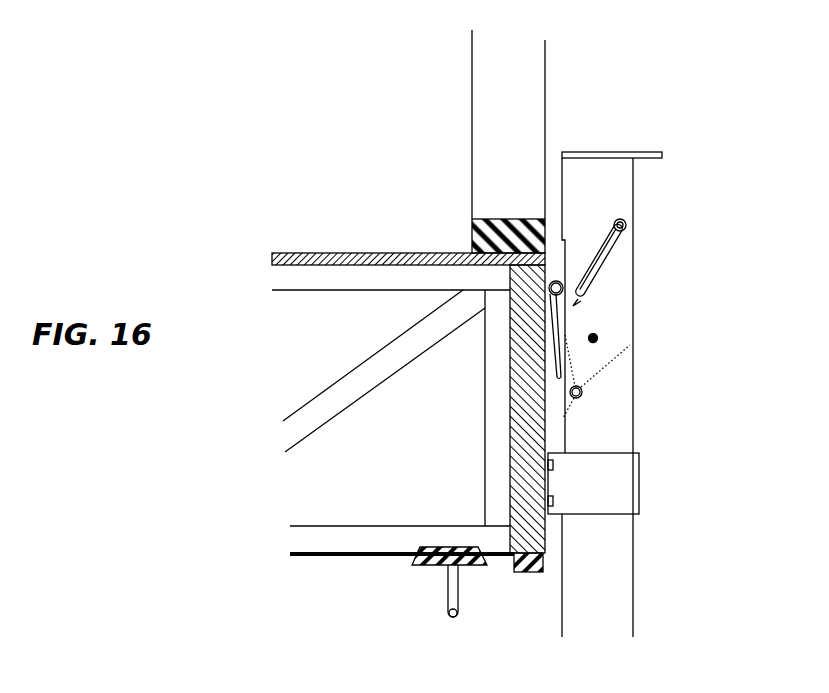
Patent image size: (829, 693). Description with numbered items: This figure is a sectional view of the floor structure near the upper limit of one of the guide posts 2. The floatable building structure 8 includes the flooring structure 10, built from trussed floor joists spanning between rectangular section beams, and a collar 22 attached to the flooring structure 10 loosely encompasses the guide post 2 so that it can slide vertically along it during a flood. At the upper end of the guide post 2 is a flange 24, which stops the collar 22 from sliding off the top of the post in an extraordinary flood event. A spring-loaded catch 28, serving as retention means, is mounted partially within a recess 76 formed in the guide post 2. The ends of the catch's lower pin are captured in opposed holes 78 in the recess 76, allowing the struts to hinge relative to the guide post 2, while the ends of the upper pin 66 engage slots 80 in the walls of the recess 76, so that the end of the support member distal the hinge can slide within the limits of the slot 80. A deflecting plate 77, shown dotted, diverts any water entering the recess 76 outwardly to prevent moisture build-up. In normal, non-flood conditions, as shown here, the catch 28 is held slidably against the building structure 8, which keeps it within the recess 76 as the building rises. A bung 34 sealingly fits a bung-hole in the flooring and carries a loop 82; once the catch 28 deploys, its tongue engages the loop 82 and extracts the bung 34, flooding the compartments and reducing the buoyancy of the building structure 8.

The guide post 2 is at (644, 556).
The building structure 8 is at (276, 193).
The flooring structure 10 is at (184, 429).
The collar 22 is at (649, 506).
The flange 24 is at (674, 162).
The spring-loaded catch 28 is at (573, 316).
The bung 34 is at (399, 563).
The upper pin 66 is at (640, 231).
The recess 76 is at (593, 338).
The deflecting plate 77 is at (614, 390).
The hole 78 is at (589, 407).
The slot 80 is at (612, 273).
The loop 82 is at (435, 611).